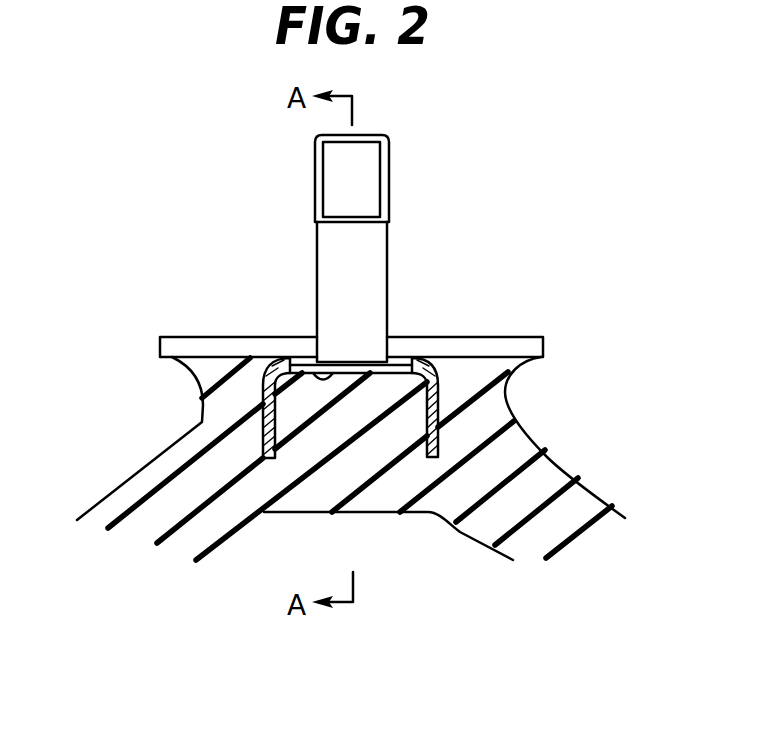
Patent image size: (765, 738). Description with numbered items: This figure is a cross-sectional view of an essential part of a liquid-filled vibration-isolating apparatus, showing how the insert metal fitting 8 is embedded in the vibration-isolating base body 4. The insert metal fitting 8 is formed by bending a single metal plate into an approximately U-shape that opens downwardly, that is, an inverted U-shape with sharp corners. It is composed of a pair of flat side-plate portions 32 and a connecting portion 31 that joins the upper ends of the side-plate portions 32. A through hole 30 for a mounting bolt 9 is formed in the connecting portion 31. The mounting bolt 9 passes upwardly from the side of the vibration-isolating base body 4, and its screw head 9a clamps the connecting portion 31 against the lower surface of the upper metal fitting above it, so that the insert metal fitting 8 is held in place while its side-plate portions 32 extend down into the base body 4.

The vibration-isolating base body 4 is at (183, 503).
The insert metal fitting 8 is at (354, 354).
The mounting bolt 9 is at (362, 243).
The screw head 9a is at (304, 362).
The through hole 30 is at (374, 362).
The connecting portion 31 is at (402, 357).
The side-plate portions 32 is at (262, 419).